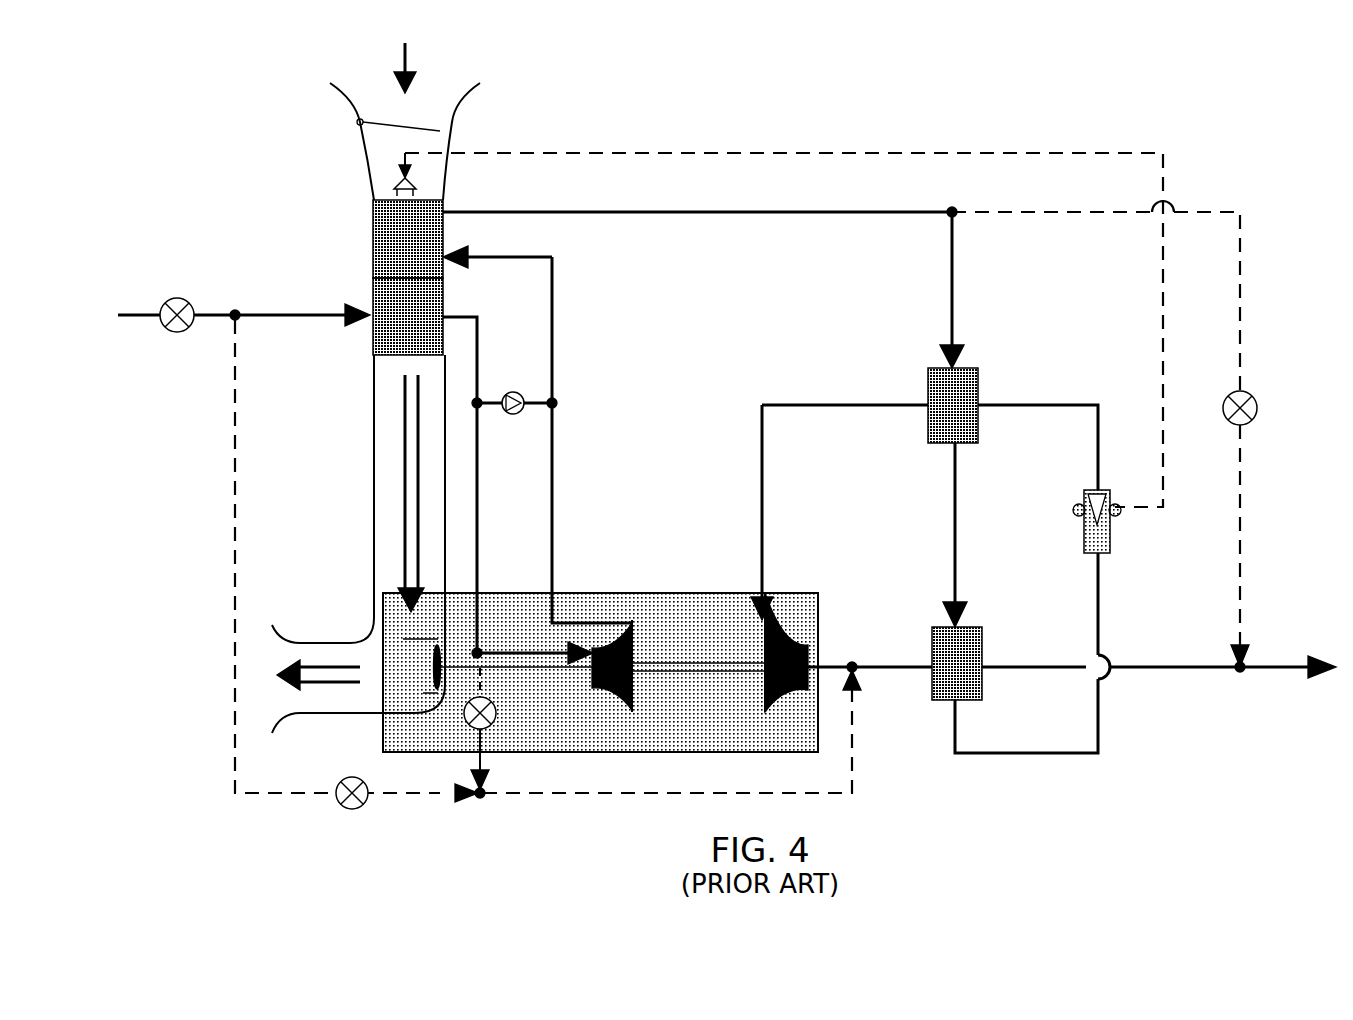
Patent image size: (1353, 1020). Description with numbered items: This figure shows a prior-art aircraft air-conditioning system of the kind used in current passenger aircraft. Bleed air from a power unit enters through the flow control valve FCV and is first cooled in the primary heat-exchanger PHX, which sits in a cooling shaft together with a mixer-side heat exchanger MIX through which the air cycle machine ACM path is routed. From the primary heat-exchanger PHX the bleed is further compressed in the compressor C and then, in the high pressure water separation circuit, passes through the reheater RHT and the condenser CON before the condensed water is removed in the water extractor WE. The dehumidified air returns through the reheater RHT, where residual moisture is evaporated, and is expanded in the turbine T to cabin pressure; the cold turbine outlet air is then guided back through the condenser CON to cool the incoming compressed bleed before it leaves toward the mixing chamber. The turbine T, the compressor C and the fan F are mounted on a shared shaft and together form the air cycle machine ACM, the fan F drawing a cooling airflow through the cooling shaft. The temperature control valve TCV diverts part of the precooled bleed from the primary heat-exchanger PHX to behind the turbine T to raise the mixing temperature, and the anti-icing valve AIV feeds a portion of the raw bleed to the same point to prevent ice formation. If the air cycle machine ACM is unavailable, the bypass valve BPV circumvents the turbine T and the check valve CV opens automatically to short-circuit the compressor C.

The flow control valve FCV is at (244, 307).
The mixer MIX is at (408, 239).
The primary heat-exchanger PHX is at (408, 316).
The check valve CV is at (514, 395).
The reheater RHT is at (953, 405).
The condenser CON is at (957, 663).
The water extractor WE is at (1107, 521).
The bypass valve BPV is at (1256, 408).
The air cycle machine ACM is at (600, 672).
The compressor C is at (612, 669).
The turbine T is at (786, 656).
The fan F is at (422, 666).
The temperature control valve TCV is at (497, 733).
The anti-icing valve AIV is at (352, 785).